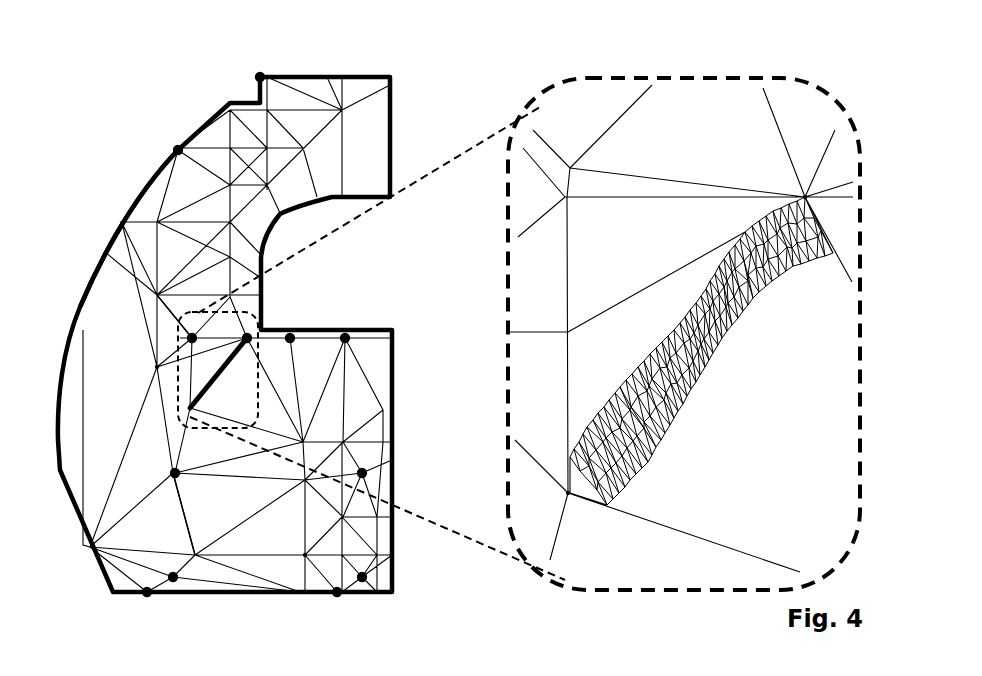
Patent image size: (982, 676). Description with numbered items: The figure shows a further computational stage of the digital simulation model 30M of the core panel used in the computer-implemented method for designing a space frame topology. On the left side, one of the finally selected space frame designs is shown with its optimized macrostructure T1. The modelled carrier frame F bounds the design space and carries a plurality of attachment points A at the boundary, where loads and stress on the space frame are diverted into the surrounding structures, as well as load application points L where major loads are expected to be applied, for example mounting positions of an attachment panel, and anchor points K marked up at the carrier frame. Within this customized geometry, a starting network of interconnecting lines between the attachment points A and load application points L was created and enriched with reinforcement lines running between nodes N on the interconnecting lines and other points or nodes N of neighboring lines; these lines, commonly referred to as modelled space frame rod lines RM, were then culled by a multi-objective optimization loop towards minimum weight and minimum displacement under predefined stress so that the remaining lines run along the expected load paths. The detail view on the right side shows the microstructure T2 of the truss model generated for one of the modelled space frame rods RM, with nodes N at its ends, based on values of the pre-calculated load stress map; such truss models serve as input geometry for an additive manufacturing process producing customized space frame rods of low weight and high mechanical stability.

The digital simulation model of the core panel 30M is at (148, 63).
The attachment points A is at (257, 76).
The carrier frame F is at (126, 207).
The macrostructure of the space frame structure T1 is at (125, 308).
The nodes N is at (156, 367).
The modelled space frame rod lines RM is at (150, 410).
The load application points L is at (290, 334).
The anchor points K is at (147, 596).
The microstructure of the truss model T2 is at (709, 381).